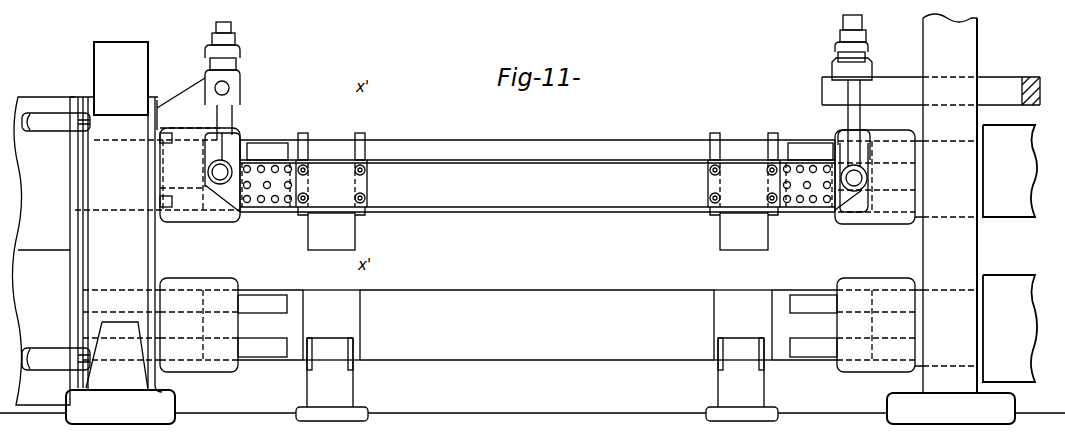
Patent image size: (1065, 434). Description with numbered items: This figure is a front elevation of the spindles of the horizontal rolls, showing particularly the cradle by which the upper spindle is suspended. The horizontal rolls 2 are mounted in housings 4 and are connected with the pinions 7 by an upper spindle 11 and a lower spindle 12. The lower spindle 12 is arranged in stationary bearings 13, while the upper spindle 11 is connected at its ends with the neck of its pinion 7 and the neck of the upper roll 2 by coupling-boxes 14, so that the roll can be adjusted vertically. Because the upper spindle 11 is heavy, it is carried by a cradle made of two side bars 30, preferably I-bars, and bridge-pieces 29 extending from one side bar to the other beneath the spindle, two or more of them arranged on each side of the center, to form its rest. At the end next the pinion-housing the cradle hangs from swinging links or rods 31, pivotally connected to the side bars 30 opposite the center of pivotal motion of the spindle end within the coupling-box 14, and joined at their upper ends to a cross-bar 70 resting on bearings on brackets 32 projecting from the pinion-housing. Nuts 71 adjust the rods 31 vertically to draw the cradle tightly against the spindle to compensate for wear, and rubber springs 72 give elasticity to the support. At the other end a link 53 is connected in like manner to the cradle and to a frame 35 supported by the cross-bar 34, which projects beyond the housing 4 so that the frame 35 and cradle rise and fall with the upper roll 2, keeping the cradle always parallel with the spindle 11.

The horizontal roll 2 is at (1010, 253).
The housing 4 is at (951, 219).
The pinion 7 is at (51, 251).
The upper spindle 11 is at (537, 172).
The lower spindle 12 is at (537, 325).
The stationary bearing 13 is at (537, 379).
The coupling-box 14 is at (207, 218).
The bridge-piece 29 is at (538, 228).
The side bar 30 is at (537, 186).
The swinging link 31 is at (222, 24).
The bracket 32 is at (181, 104).
The cross-bar 34 is at (931, 91).
The frame 35 is at (836, 65).
The link rod 53 is at (849, 118).
The cross-bar 70 is at (207, 78).
The nut 71 is at (232, 37).
The rubber spring 72 is at (237, 63).